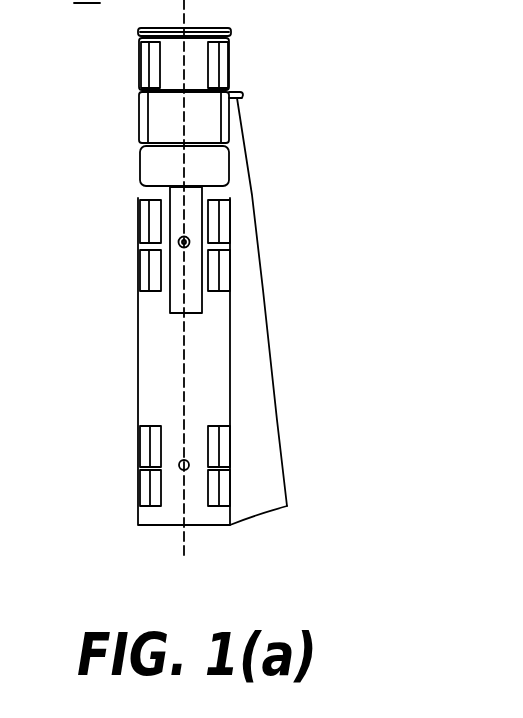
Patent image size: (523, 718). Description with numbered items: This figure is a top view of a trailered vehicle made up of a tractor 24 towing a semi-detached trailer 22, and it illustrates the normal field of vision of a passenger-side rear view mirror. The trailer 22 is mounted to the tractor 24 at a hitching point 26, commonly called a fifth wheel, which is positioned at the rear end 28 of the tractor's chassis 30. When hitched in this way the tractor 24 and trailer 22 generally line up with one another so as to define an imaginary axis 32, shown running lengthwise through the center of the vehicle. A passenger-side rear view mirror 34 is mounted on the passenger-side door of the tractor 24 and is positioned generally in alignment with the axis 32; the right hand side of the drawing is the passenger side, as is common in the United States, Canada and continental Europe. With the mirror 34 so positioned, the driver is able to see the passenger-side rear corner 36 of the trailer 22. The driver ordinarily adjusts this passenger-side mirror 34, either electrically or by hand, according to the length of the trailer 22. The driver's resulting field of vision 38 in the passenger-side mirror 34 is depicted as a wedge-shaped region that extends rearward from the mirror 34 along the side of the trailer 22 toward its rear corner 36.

The semi-detached trailer 22 is at (155, 391).
The tractor 24 is at (166, 128).
The hitching point 26 is at (178, 243).
The rear end 28 is at (162, 287).
The chassis 30 is at (179, 239).
The axis 32 is at (184, 538).
The passenger-side rear view mirror 34 is at (247, 97).
The passenger-side rear corner 36 is at (231, 527).
The field of vision 38 is at (252, 382).